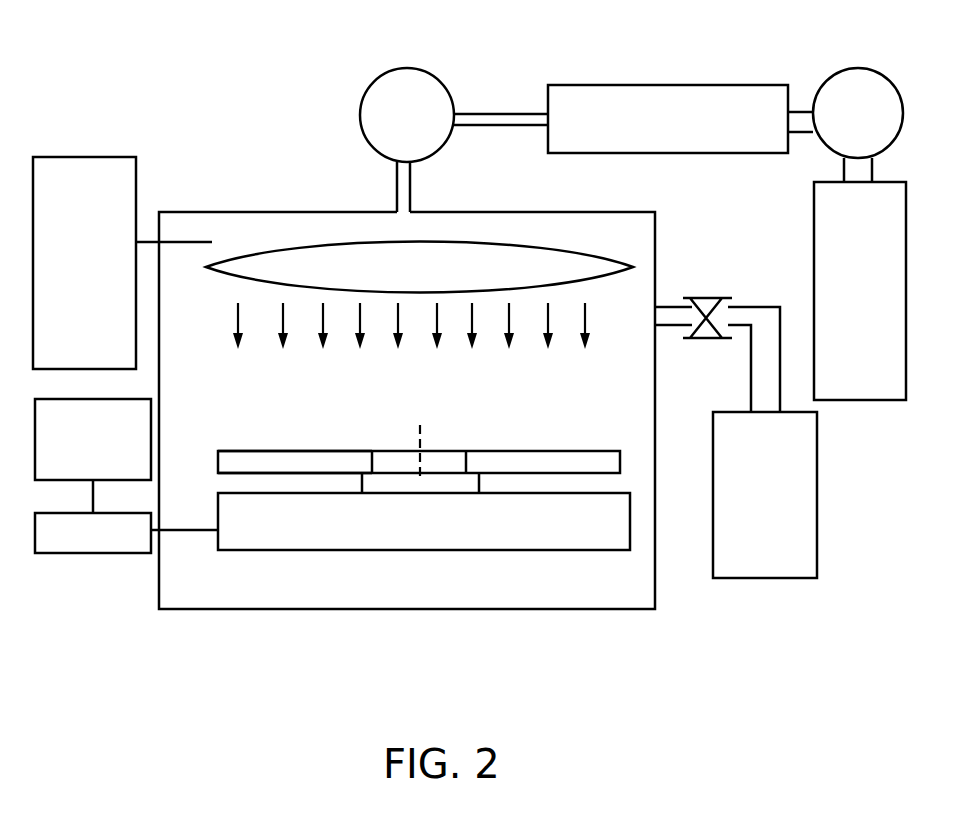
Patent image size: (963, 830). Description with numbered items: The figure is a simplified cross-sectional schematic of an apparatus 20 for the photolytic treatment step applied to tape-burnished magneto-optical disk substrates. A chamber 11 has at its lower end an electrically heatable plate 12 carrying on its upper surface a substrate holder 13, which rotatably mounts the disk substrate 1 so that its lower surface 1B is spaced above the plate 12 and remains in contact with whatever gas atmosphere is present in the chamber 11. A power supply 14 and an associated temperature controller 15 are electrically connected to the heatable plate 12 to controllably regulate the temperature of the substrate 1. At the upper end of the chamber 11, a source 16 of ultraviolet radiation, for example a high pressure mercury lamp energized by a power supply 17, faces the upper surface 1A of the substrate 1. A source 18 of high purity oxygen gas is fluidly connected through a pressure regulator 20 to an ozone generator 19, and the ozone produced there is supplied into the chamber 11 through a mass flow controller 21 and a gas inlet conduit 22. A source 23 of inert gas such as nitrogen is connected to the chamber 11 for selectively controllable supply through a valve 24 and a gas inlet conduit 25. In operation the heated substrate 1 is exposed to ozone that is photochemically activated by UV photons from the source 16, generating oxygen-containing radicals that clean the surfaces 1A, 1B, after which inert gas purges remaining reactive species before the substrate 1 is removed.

The disk substrate 1 is at (577, 462).
The upper surface 1A is at (232, 451).
The lower surface 1B is at (218, 476).
The chamber 11 is at (596, 616).
The electrically heatable plate 12 is at (446, 536).
The substrate holder 13 is at (399, 491).
The power supply 14 is at (74, 455).
The temperature controller 15 is at (75, 550).
The source of ultra-violet radiation 16 is at (389, 283).
The power supply 17 is at (71, 283).
The source of oxygen gas 18 is at (842, 303).
The ozone generator 19 is at (646, 132).
The pressure regulator 20 is at (860, 69).
The mass flow controller 21 is at (386, 88).
The gas inlet conduit 22 is at (397, 198).
The source of inert gas 23 is at (748, 517).
The valve 24 is at (716, 290).
The gas inlet conduit 25 is at (670, 294).